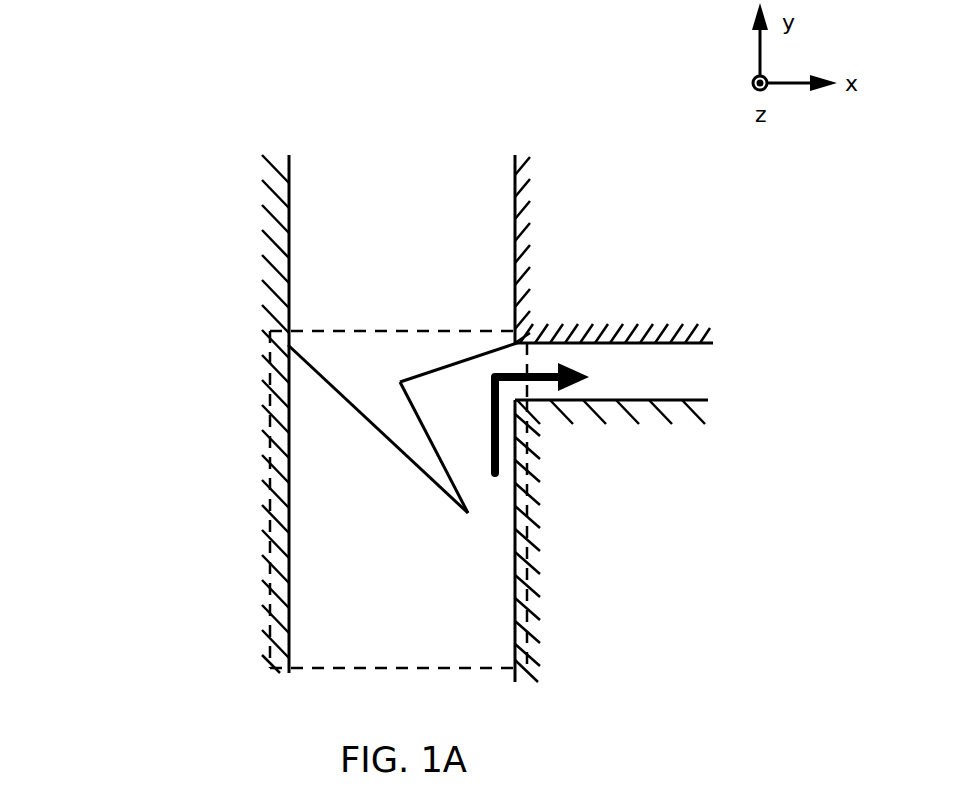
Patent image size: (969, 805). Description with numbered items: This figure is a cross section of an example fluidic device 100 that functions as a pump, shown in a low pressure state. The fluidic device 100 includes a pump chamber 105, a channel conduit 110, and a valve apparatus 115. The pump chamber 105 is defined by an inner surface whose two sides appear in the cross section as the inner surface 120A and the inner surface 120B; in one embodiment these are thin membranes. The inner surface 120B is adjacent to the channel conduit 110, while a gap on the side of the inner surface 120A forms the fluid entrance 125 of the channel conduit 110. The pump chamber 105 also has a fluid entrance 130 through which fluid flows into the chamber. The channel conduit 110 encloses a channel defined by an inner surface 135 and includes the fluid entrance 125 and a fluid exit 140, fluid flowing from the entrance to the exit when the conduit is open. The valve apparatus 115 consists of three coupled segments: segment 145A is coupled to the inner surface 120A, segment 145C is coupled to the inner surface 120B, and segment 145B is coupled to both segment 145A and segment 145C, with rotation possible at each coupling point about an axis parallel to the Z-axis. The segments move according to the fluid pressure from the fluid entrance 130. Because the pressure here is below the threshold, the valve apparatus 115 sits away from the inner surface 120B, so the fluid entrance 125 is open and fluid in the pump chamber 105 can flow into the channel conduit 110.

The fluidic device 100 is at (80, 27).
The pump chamber 105 is at (345, 668).
The channel conduit 110 is at (665, 372).
The valve apparatus 115 is at (289, 416).
The inner surface 120A is at (290, 187).
The inner surface 120B is at (516, 193).
The fluid entrance 125 is at (640, 282).
The fluid entrance 130 is at (412, 648).
The inner surface 135 is at (632, 342).
The fluid exit 140 is at (710, 367).
The segment 145A is at (363, 422).
The segment 145B is at (423, 425).
The segment 145C is at (445, 362).